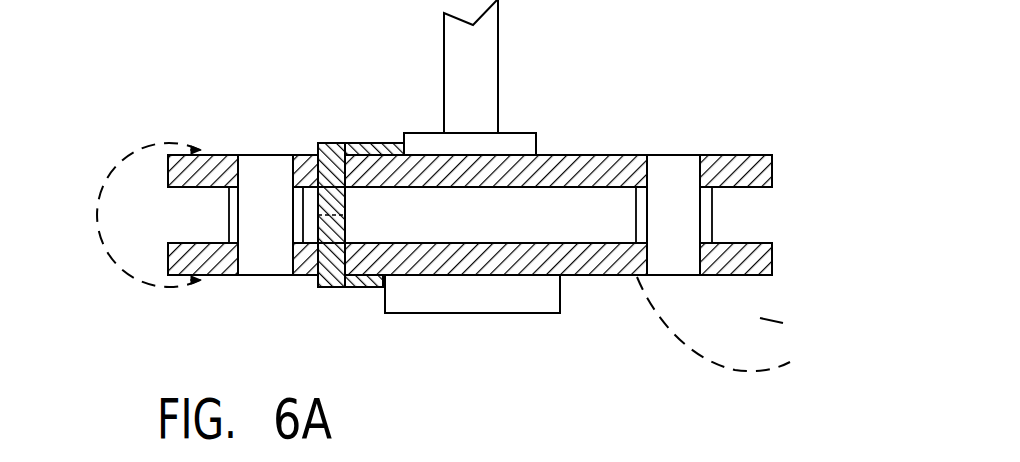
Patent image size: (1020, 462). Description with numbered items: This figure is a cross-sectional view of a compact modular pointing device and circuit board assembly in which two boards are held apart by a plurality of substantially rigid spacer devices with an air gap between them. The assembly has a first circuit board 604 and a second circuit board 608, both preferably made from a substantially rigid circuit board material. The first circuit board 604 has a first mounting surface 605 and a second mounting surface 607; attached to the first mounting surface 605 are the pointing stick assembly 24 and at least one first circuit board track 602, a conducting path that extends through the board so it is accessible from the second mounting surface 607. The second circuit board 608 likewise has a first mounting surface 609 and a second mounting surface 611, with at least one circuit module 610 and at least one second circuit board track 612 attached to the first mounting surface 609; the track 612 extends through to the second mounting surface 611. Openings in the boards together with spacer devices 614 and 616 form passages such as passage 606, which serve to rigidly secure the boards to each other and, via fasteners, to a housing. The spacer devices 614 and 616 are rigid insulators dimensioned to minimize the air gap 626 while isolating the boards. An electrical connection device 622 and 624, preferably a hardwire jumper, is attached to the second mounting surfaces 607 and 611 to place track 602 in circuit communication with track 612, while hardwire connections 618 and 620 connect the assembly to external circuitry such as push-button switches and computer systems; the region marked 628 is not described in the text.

The pointing stick assembly 24 is at (513, 66).
The first circuit board track 602 is at (388, 143).
The first circuit board 604 is at (588, 155).
The first mounting surface 605 is at (562, 155).
The passage 606 is at (670, 155).
The second mounting surface 607 is at (752, 188).
The second circuit board 608 is at (265, 260).
The first mounting surface 609 is at (583, 277).
The circuit module 610 is at (470, 315).
The second mounting surface 611 is at (753, 240).
The second circuit board track 612 is at (360, 287).
The spacer device 614 is at (707, 210).
The spacer device 616 is at (232, 218).
The hardwire connection 618 is at (732, 276).
The hardwire connection 620 is at (707, 363).
The electrical connection device 622 is at (332, 232).
The electrical connection device 624 is at (332, 200).
The air gap 626 is at (490, 229).
The detail region 628 is at (131, 159).